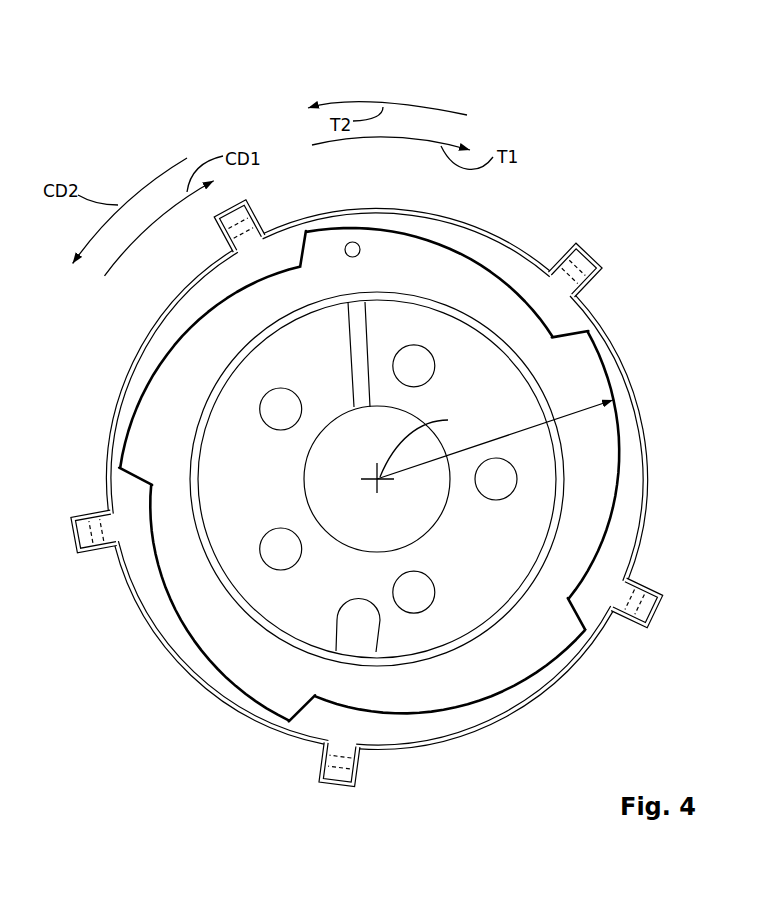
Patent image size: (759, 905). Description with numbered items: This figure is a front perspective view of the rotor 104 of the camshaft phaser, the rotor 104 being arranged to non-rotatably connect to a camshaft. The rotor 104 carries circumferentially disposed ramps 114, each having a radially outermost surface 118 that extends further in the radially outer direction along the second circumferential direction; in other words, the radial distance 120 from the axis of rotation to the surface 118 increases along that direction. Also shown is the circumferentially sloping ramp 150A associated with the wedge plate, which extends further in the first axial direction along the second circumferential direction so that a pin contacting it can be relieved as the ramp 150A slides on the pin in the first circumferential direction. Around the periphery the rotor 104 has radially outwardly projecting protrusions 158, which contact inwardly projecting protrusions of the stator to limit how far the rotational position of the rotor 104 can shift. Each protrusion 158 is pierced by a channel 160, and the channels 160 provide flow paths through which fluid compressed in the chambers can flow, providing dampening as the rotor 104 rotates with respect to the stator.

The rotor 104 is at (403, 473).
The ramps 114 is at (615, 367).
The radially outermost surfaces 118 is at (605, 533).
The radial distance 120 is at (570, 417).
The circumferentially sloping ramp 150A is at (363, 249).
The radially outwardly projecting protrusions 158 is at (658, 611).
The channels 160 is at (584, 256).